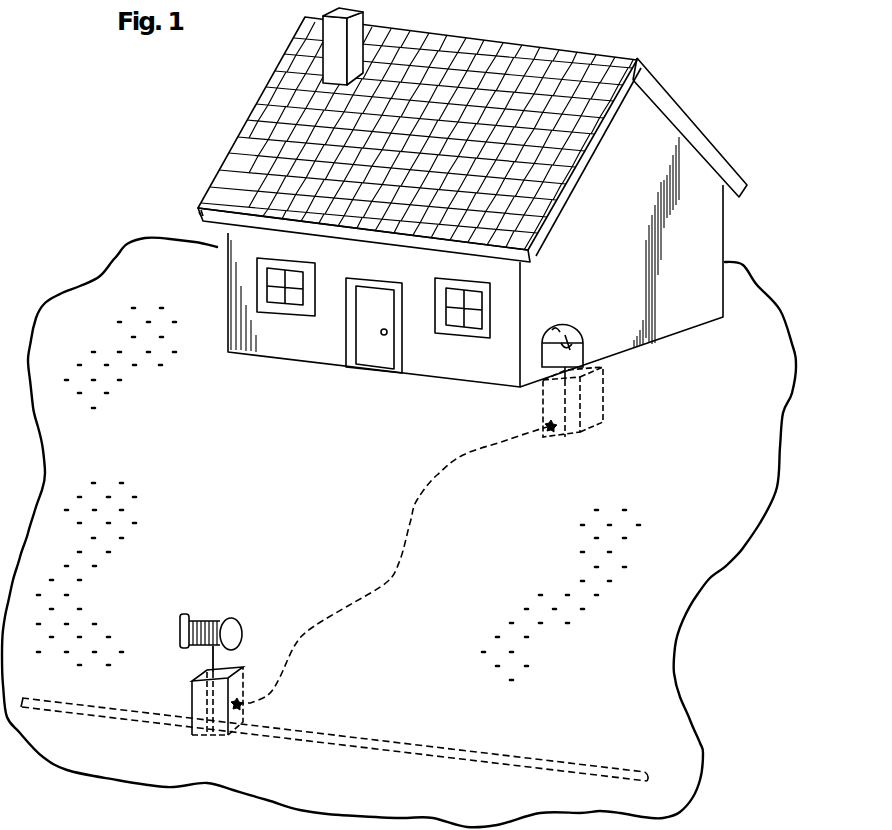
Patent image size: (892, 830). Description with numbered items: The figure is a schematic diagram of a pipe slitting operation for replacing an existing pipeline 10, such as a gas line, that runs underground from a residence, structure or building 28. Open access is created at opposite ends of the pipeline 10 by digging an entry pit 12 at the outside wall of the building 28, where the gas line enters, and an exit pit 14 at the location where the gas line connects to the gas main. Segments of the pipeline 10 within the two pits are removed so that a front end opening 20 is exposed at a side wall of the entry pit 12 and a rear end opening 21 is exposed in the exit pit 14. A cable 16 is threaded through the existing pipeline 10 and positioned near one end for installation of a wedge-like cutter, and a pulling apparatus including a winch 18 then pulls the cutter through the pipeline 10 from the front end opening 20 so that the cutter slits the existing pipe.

The existing pipeline 10 is at (352, 606).
The entry pit 12 is at (604, 412).
The exit pit 14 is at (248, 712).
The cable 16 is at (207, 655).
The winch 18 is at (223, 616).
The front end opening 20 is at (553, 432).
The rear end opening 21 is at (237, 728).
The building 28 is at (725, 222).